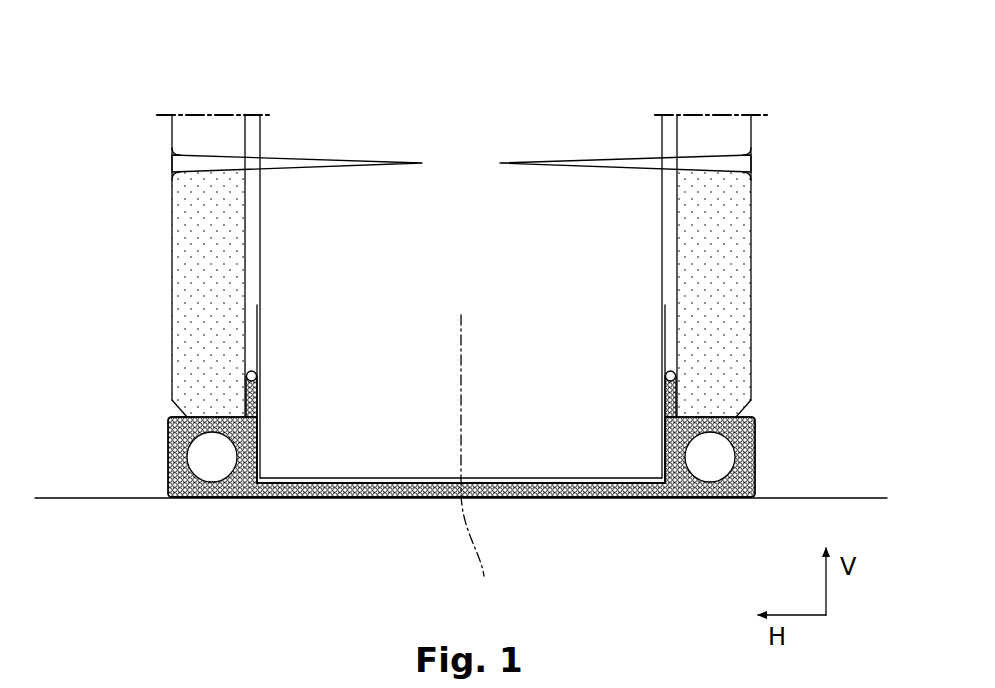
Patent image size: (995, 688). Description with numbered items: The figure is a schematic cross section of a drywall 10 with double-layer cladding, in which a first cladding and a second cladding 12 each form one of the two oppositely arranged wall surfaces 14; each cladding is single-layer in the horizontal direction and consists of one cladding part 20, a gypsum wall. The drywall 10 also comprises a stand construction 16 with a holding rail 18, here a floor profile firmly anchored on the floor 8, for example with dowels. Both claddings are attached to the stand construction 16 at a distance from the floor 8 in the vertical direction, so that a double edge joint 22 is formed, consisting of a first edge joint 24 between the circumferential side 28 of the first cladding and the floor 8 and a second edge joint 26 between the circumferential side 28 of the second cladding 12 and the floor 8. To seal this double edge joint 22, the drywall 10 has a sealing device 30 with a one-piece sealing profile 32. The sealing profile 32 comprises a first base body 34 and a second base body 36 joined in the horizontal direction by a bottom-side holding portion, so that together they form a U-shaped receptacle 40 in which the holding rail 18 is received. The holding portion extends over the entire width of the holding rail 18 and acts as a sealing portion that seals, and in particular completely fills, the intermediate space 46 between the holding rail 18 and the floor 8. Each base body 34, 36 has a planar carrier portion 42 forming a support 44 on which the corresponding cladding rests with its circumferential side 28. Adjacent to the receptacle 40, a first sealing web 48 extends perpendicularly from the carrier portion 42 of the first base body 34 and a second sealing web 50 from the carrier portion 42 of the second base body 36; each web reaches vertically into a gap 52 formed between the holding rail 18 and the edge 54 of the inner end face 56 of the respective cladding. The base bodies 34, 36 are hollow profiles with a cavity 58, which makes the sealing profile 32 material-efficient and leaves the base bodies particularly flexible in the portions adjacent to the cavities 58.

The floor 8 is at (415, 553).
The drywall 10 is at (148, 78).
The second cladding 12 is at (760, 212).
The wall surface 14 is at (466, 266).
The stand construction 16 is at (391, 468).
The holding rail 18 is at (410, 483).
The cladding part 20 is at (200, 270).
The double edge joint 22 is at (160, 455).
The first edge joint 24 is at (144, 457).
The second edge joint 26 is at (768, 452).
The circumferential side 28 is at (168, 428).
The sealing device 30 is at (251, 503).
The sealing profile 32 is at (218, 540).
The first base body 34 is at (172, 478).
The second base body 36 is at (755, 478).
The U-shaped receptacle 40 is at (553, 455).
The carrier portion 42 is at (188, 420).
The support 44 is at (212, 410).
The intermediate space 46 is at (532, 503).
The first sealing web 48 is at (256, 378).
The second sealing web 50 is at (666, 378).
The gap 52 is at (258, 330).
The edge 54 is at (254, 405).
The inner end face 56 is at (247, 232).
The cavity 58 is at (210, 468).